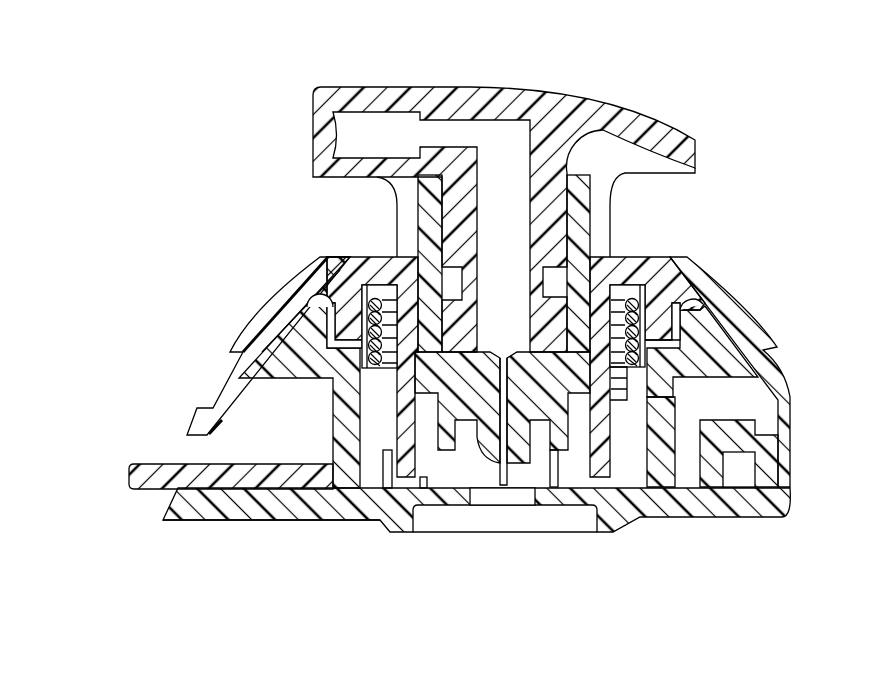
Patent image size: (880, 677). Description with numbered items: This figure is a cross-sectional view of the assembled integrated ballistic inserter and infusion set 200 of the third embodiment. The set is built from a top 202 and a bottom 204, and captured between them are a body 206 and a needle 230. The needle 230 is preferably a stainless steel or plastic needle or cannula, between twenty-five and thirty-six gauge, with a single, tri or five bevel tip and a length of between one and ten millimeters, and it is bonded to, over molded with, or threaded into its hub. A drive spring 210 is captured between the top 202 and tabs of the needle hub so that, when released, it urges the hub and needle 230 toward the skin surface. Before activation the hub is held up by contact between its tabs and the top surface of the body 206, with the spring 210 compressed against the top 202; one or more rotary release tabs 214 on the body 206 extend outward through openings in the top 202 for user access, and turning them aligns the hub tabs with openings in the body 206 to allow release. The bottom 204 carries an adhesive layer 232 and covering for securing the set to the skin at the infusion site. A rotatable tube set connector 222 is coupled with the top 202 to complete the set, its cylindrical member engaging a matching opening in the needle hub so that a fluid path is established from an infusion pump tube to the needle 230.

The integrated ballistic inserter and infusion set 200 is at (270, 51).
The rotatable tube set connector 222 is at (460, 86).
The top 202 is at (315, 283).
The drive spring 210 is at (362, 330).
The body 206 is at (285, 352).
The rotary release tabs 214 is at (140, 464).
The bottom 204 is at (180, 508).
The adhesive layer 232 is at (254, 522).
The needle 230 is at (501, 488).